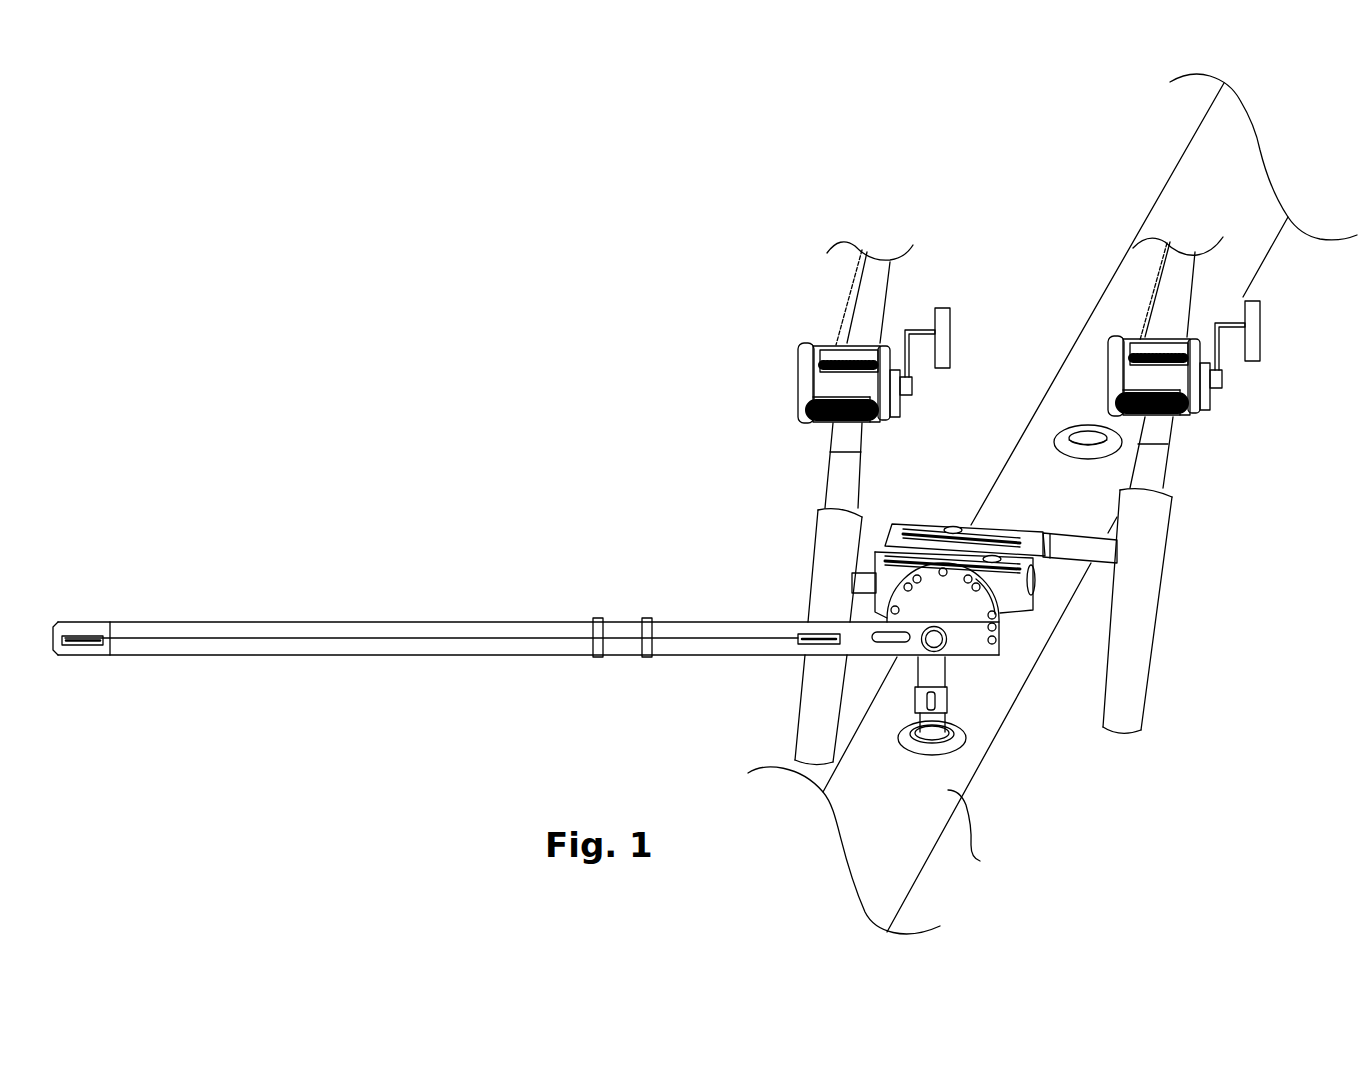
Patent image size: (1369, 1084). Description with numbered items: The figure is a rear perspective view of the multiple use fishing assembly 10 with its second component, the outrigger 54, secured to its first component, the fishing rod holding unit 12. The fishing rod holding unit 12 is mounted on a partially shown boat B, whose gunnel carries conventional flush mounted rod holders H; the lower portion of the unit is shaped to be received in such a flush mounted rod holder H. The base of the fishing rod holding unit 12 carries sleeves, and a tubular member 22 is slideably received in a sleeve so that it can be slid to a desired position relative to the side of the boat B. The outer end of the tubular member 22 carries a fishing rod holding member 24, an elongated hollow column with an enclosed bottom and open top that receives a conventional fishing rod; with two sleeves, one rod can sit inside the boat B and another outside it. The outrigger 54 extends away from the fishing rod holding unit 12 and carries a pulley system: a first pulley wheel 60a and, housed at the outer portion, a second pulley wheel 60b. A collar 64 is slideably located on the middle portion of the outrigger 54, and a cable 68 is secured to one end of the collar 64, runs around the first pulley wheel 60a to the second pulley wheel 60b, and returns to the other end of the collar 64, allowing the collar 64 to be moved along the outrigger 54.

The multiple use fishing assembly 10 is at (994, 578).
The fishing rod holding unit 12 is at (1012, 610).
The tubular member 22 is at (1078, 543).
The fishing rod holding member 24 is at (1113, 698).
The outrigger 54 is at (526, 634).
The first pulley wheel 60a is at (817, 635).
The second pulley wheel 60b is at (92, 641).
The collar 64 is at (622, 652).
The cable 68 is at (447, 638).
The flush mounted rod holders H is at (1067, 433).
The boat B is at (1052, 504).